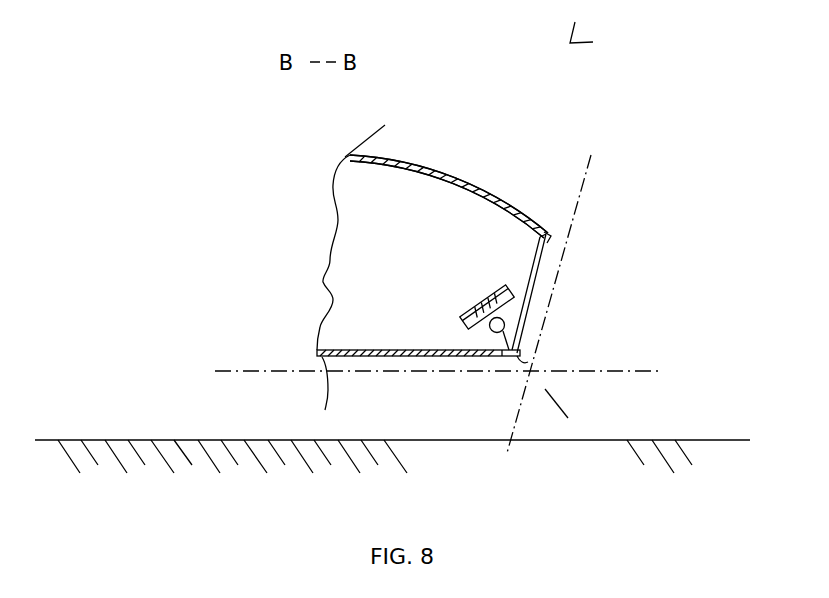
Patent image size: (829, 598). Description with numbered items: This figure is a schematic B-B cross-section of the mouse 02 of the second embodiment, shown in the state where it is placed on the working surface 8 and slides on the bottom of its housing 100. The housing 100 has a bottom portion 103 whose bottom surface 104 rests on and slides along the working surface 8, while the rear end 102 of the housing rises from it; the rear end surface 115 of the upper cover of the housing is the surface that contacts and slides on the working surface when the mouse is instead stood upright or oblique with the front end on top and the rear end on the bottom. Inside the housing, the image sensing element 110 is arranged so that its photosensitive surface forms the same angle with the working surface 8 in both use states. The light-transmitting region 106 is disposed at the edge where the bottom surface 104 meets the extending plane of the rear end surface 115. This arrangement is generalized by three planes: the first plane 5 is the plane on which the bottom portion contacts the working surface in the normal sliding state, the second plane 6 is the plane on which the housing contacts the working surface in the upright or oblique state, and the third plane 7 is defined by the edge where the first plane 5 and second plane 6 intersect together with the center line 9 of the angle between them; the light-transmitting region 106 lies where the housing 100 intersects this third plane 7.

The mouse 02 is at (580, 37).
The housing 100 is at (416, 164).
The rear end 102 is at (497, 195).
The light-transmitting region 106 is at (535, 348).
The rear end surface of the upper cover 115 is at (552, 237).
The second plane 6 is at (575, 210).
The first plane 5 is at (622, 370).
The image sensing element 110 is at (482, 302).
The bottom portion 103 is at (400, 356).
The bottom surface 104 is at (440, 356).
The third plane 7 is at (520, 358).
The center line 9 is at (560, 410).
The working surface 8 is at (232, 440).